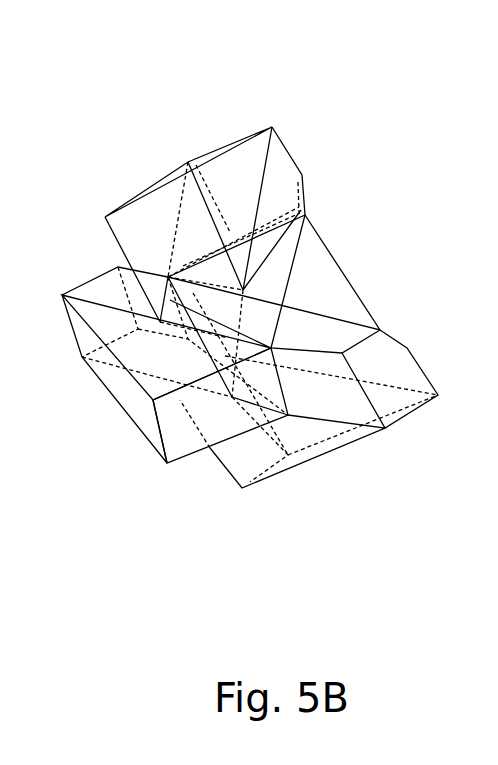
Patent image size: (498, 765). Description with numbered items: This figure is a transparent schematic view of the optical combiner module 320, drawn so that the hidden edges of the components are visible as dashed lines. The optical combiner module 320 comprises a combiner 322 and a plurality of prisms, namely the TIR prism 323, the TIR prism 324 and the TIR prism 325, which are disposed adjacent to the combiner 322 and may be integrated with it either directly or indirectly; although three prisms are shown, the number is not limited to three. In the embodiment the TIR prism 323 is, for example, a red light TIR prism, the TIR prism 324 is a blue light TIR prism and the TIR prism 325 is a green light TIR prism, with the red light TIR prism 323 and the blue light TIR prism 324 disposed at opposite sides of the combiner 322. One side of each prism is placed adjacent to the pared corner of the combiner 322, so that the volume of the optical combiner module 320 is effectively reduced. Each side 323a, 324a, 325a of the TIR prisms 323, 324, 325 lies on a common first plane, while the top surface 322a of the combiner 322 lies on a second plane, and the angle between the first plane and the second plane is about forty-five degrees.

The optical combiner module 320 is at (271, 289).
The combiner 322 is at (330, 299).
The top surface of the combiner 322a is at (318, 267).
The TIR prism 323 is at (177, 239).
The side of the TIR prism 323a is at (135, 222).
The TIR prism 324 is at (309, 413).
The side of the TIR prism 324a is at (253, 460).
The TIR prism 325 is at (175, 407).
The side of the TIR prism 325a is at (187, 440).